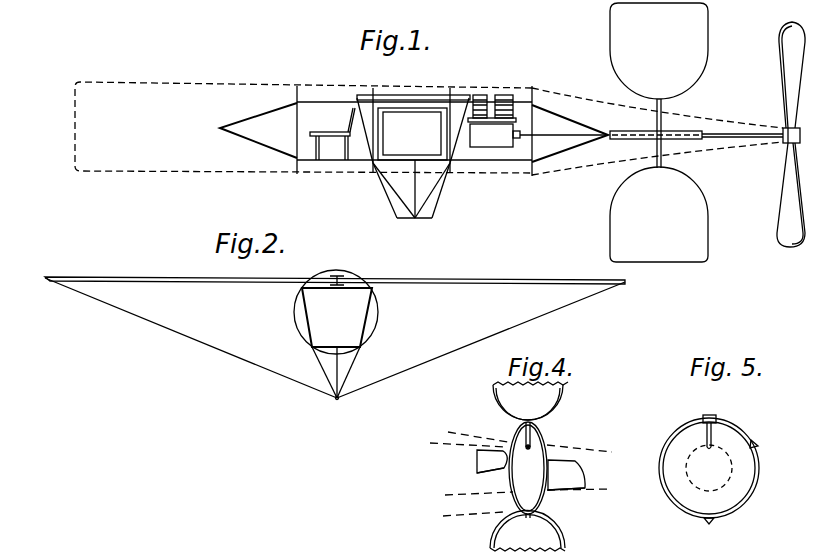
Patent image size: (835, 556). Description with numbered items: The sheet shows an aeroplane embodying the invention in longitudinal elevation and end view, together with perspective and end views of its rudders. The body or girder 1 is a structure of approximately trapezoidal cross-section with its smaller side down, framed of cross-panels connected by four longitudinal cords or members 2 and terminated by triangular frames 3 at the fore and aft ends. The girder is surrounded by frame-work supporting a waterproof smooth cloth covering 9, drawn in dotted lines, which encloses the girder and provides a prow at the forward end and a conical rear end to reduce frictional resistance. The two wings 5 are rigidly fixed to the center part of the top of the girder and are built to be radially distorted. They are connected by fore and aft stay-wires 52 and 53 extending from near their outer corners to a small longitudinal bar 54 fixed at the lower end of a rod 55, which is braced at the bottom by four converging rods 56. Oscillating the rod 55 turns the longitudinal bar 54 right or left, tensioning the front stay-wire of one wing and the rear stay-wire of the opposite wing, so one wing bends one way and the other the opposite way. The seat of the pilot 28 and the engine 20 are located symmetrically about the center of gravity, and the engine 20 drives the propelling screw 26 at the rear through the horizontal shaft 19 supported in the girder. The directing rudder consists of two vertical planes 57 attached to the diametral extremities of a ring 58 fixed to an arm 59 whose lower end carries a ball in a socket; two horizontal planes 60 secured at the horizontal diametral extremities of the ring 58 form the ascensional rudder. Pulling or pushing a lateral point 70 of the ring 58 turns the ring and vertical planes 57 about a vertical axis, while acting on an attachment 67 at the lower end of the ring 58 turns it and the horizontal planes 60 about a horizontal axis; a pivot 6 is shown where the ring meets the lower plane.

In FIG. 1, the body or girder 1 is at (319, 108).
In FIG. 2, the body or girder 1 is at (347, 318).
In FIG. 1, the longitudinal cords or members 2 is at (345, 102).
In FIG. 2, the longitudinal cords or members 2 is at (373, 288).
In FIG. 1, the triangular frames 3 is at (257, 123).
In FIG. 1, the wings 5 is at (412, 96).
In FIG. 2, the wings 5 is at (168, 276).
In FIG. 4, the pivot 6 is at (538, 516).
In FIG. 1, the waterproof smooth cloth covering 9 is at (165, 83).
In FIG. 1, the horizontal shaft 19 is at (722, 133).
In FIG. 1, the engine 20 is at (482, 97).
In FIG. 1, the propelling screw 26 is at (793, 42).
In FIG. 1, the seat of the pilot 28 is at (333, 136).
In FIG. 1, the fore stay-wires 52 is at (378, 183).
In FIG. 1, the aft stay-wires 53 is at (442, 197).
In FIG. 2, the aft stay-wires 53 is at (240, 360).
In FIG. 2, the longitudinal bar 54 is at (349, 413).
In FIG. 1, the rod 55 is at (400, 202).
In FIG. 2, the rod 55 is at (330, 395).
In FIG. 1, the converging rods 56 is at (397, 195).
In FIG. 2, the converging rods 56 is at (320, 375).
In FIG. 1, the vertical planes 57 is at (659, 132).
In FIG. 4, the vertical planes 57 is at (558, 397).
In FIG. 1, the ring 58 is at (657, 152).
In FIG. 4, the ring 58 is at (546, 441).
In FIG. 5, the ring 58 is at (668, 490).
In FIG. 4, the arm 59 is at (525, 432).
In FIG. 5, the arm 59 is at (718, 430).
In FIG. 1, the horizontal planes 60 is at (700, 140).
In FIG. 4, the horizontal planes 60 is at (482, 462).
In FIG. 5, the attachment 67 is at (717, 532).
In FIG. 5, the lateral point 70 is at (758, 446).